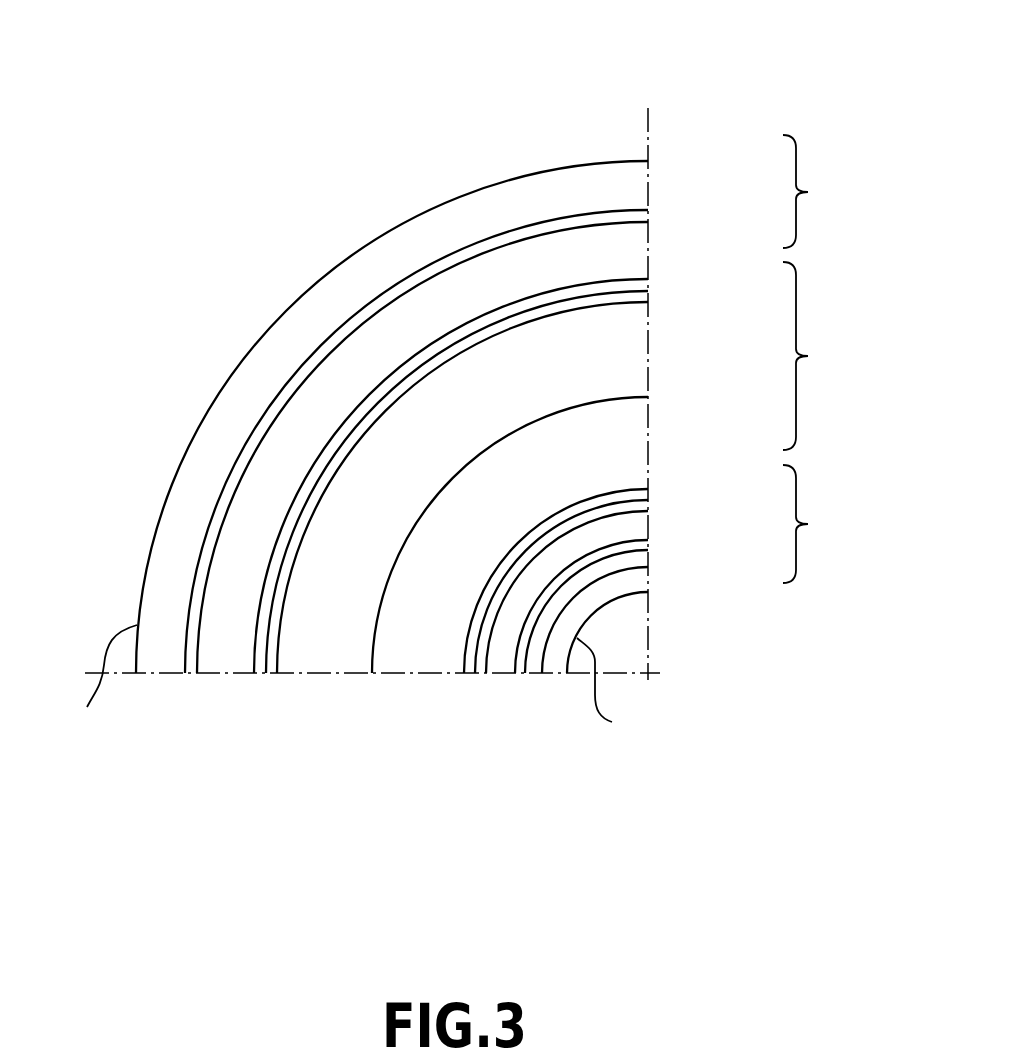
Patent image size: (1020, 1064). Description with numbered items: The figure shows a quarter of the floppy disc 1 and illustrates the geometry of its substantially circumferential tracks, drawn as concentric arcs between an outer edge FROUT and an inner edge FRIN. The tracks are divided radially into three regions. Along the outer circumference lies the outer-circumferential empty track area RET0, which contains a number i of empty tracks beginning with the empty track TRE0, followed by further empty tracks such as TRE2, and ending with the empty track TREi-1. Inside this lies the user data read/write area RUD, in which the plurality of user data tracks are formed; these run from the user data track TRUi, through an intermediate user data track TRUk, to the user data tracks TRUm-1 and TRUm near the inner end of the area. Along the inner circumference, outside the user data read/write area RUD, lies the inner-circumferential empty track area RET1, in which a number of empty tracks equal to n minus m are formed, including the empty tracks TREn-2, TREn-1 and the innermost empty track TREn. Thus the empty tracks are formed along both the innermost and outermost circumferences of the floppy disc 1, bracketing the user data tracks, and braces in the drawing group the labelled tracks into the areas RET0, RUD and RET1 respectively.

The floppy disc 1 is at (268, 182).
The empty track TRE0 is at (603, 207).
The empty track TRE2 is at (612, 220).
The empty track TREi-1 is at (603, 275).
The user data track TRUi is at (610, 288).
The user data track TRUk is at (603, 398).
The user data track TRUm-1 is at (592, 495).
The user data track TRUm is at (611, 502).
The empty track TREn-2 is at (613, 538).
The empty track TREn-1 is at (626, 553).
The empty track TREn is at (623, 572).
The outer-circumferential empty track area RET0 is at (822, 191).
The user data read/write area RUD is at (820, 356).
The inner-circumferential empty track area RET1 is at (822, 524).
The outer edge FROUT is at (92, 681).
The inner edge FRIN is at (621, 688).